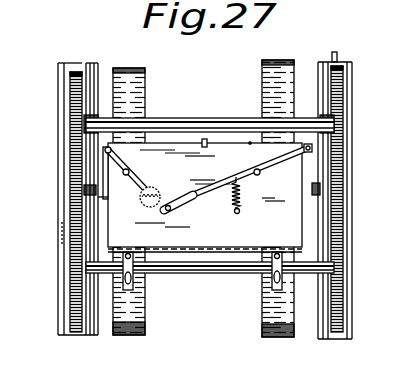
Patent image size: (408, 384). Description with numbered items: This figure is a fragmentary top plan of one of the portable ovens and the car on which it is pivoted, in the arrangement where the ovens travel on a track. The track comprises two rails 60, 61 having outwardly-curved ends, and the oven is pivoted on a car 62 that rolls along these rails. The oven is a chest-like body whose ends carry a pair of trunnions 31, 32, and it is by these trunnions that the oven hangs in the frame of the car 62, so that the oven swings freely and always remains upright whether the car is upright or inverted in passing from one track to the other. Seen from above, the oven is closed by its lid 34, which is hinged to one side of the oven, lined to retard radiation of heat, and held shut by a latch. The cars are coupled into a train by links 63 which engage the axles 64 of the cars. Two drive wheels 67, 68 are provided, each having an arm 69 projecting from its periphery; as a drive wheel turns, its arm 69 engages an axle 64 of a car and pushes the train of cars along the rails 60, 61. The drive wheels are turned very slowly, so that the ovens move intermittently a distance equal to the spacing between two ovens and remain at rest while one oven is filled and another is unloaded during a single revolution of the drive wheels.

The rail 60 is at (334, 62).
The rail 61 is at (80, 63).
The car 62 is at (84, 189).
The link 63 is at (92, 86).
The axle 64 is at (227, 121).
The drive wheel 67 is at (286, 339).
The drive wheel 68 is at (137, 336).
The arm 69 is at (135, 281).
The trunnion 31 is at (103, 202).
The trunnion 32 is at (308, 210).
The lid 34 is at (258, 205).